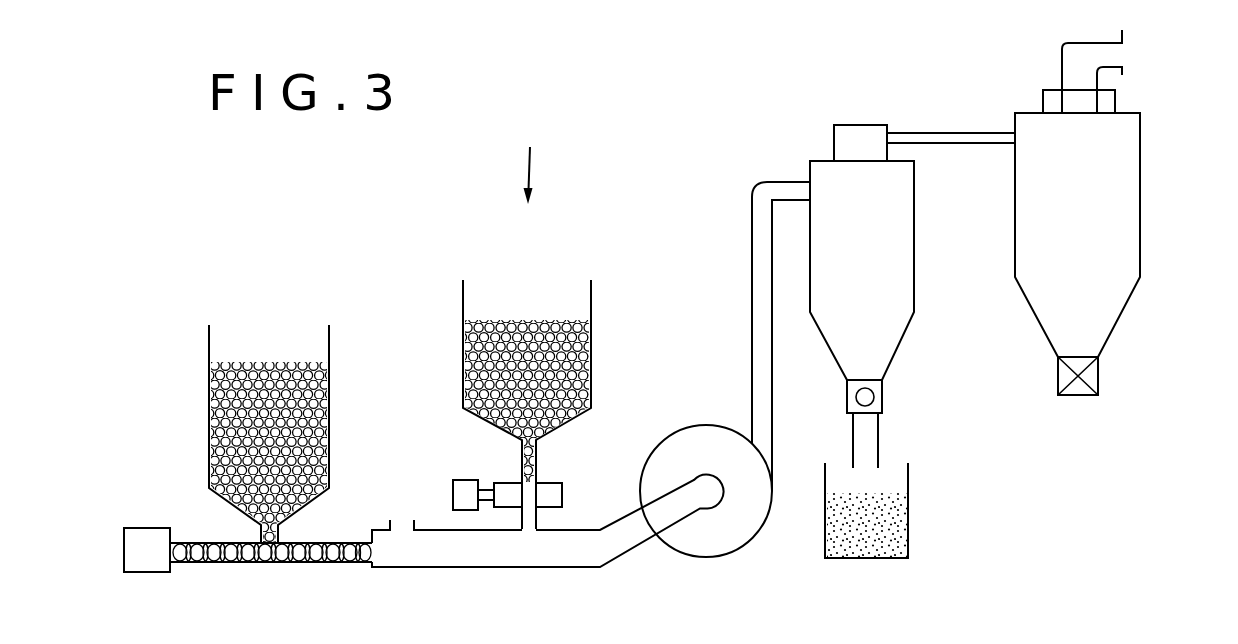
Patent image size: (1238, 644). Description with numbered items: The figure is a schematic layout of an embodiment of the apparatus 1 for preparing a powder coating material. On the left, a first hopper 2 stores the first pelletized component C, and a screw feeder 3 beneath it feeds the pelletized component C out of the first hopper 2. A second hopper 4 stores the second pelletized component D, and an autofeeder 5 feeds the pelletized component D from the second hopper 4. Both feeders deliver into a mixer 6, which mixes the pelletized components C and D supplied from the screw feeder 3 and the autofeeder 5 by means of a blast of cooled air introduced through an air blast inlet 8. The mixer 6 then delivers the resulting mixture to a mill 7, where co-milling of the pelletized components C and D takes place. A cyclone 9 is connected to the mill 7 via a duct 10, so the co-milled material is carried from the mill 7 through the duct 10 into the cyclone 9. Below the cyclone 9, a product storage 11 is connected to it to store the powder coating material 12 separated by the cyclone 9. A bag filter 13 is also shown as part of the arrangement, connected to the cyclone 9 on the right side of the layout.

The apparatus for preparing the powder coating material 1 is at (527, 158).
The first hopper 2 is at (208, 343).
The first pelletized component C is at (208, 408).
The screw feeder 3 is at (208, 542).
The second hopper 4 is at (592, 293).
The second pelletized component D is at (592, 355).
The autofeeder 5 is at (555, 497).
The mixer 6 is at (493, 568).
The mill 7 is at (738, 527).
The air blast inlet 8 is at (401, 527).
The cyclone 9 is at (915, 253).
The duct 10 is at (752, 298).
The product storage 11 is at (909, 480).
The powder coating material 12 is at (888, 525).
The bag filter 13 is at (1141, 182).